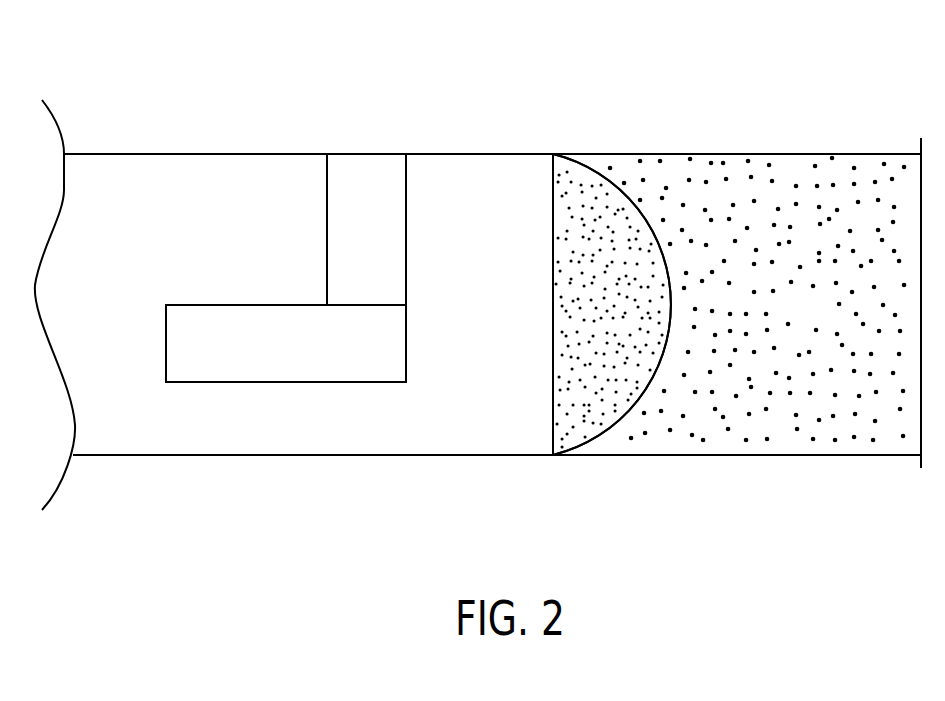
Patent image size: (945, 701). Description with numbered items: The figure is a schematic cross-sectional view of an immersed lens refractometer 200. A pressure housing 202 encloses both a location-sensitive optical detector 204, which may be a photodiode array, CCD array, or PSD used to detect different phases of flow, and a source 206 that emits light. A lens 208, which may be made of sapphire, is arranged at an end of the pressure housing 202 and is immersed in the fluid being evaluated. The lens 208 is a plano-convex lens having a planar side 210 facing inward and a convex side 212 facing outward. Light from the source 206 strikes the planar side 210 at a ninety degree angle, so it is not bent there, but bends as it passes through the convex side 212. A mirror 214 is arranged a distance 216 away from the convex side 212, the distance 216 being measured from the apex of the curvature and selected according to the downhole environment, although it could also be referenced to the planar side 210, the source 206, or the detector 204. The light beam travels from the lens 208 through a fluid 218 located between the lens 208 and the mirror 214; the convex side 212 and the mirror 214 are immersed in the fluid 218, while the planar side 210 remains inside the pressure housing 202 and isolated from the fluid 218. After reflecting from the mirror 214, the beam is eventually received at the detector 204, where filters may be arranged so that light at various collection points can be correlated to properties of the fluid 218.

The immersed lens refractometer 200 is at (478, 282).
The pressure housing 202 is at (462, 154).
The location-sensitive optical detector 204 is at (363, 188).
The source 206 is at (313, 360).
The lens 208 is at (600, 190).
The planar side 210 is at (553, 350).
The convex side 212 is at (617, 420).
The mirror 214 is at (921, 412).
The distance 216 is at (920, 305).
The fluid 218 is at (787, 206).